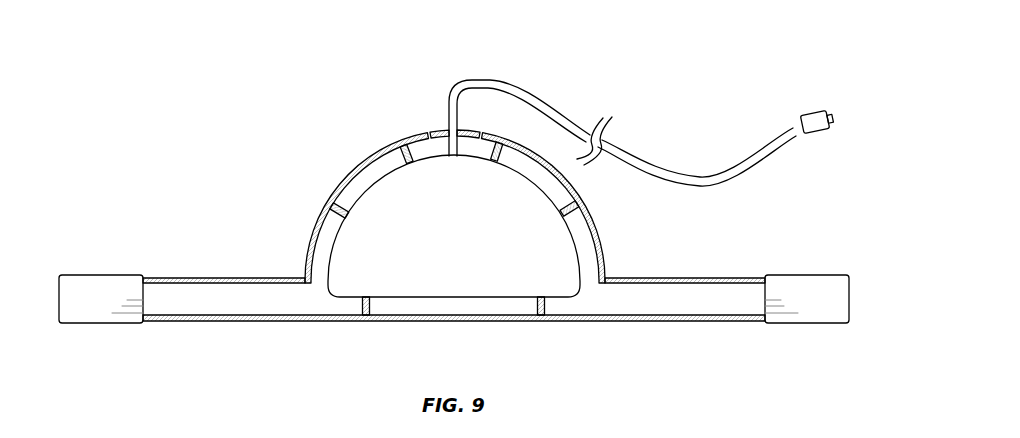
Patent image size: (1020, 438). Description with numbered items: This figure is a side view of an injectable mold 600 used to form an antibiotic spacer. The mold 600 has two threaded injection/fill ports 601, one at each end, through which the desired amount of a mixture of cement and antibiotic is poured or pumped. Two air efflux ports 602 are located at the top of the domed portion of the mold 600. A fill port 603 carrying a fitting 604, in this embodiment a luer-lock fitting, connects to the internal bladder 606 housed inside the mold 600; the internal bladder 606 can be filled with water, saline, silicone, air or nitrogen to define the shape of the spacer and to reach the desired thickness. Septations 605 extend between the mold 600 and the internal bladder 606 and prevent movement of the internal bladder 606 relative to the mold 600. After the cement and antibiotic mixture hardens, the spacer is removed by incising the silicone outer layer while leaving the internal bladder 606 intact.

The mold 600 is at (268, 66).
The threaded injection/fill port 601 is at (93, 282).
The air efflux port 602 is at (424, 128).
The fill port 603 is at (732, 175).
The fitting 604 is at (817, 113).
The septation 605 is at (400, 152).
The internal bladder 606 is at (475, 234).